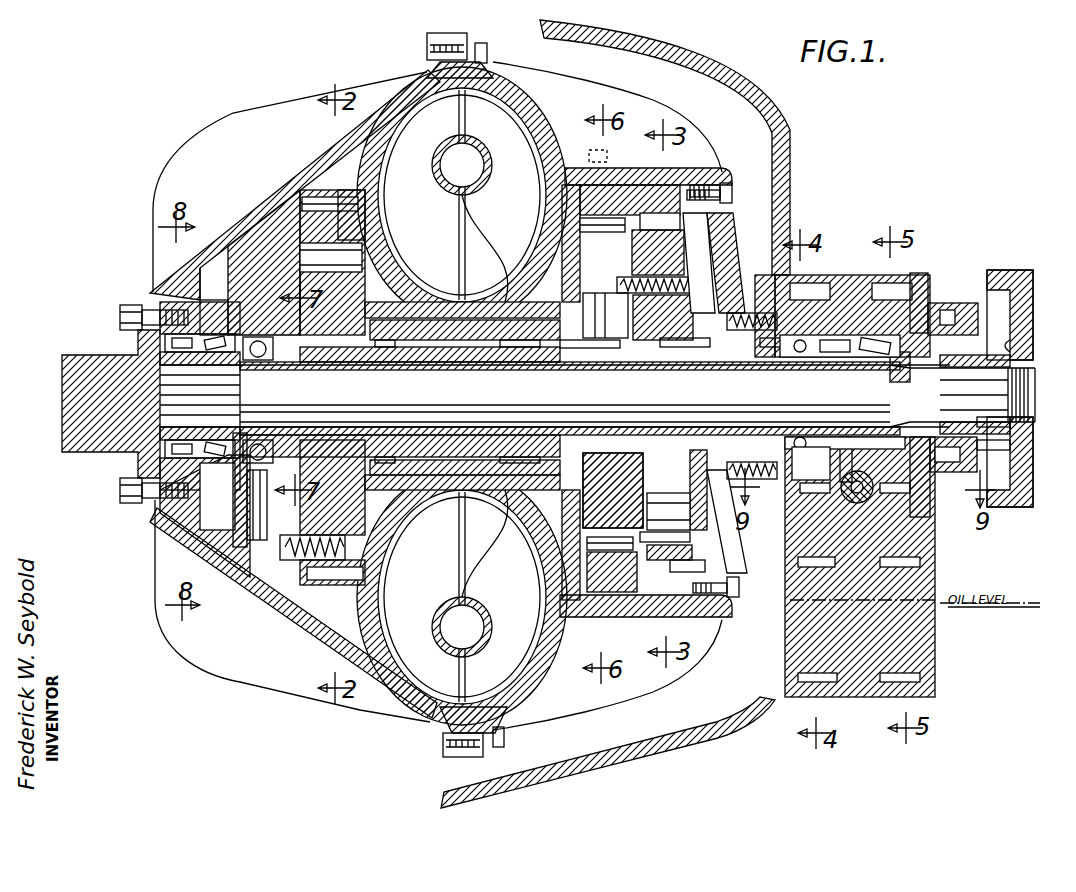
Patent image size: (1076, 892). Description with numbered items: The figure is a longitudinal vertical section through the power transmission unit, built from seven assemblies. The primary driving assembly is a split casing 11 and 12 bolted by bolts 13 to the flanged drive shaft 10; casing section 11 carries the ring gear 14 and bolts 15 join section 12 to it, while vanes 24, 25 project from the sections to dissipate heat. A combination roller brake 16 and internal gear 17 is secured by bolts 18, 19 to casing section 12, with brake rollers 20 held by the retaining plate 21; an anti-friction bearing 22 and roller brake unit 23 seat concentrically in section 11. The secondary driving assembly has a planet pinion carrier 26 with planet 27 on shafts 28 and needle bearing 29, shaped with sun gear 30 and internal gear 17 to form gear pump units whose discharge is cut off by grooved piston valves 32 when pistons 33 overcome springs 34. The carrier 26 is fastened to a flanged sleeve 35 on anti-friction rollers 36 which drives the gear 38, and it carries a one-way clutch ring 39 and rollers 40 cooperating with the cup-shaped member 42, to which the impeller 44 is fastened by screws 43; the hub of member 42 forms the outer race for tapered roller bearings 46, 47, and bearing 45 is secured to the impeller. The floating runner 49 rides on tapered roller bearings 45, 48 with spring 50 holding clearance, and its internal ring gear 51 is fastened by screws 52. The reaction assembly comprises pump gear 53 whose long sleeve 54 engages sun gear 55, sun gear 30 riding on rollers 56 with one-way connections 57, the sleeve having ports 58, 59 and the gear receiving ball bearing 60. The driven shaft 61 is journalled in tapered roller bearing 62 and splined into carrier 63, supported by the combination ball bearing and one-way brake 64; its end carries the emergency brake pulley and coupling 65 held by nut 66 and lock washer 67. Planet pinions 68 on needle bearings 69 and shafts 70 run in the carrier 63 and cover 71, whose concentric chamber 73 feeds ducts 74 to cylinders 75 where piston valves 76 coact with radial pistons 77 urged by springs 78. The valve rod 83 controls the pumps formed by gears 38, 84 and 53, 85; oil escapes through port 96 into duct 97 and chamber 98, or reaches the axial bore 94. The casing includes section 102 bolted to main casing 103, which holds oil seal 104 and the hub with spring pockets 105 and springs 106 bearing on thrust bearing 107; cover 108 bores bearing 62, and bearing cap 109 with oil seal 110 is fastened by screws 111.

The flanged drive shaft 10 is at (75, 356).
The casing section 11 is at (305, 162).
The casing section 12 is at (548, 97).
The bolts 13 is at (125, 305).
The ring gear 14 is at (427, 40).
The bolts 15 is at (488, 53).
The roller brake 16 is at (640, 213).
The internal gear 17 is at (690, 185).
The bolts 18 is at (590, 155).
The bolts 19 is at (728, 185).
The brake rollers 20 is at (605, 218).
The retaining plate 21 is at (560, 198).
The anti-friction bearing 22 is at (206, 325).
The roller brake unit 23 is at (165, 340).
The vanes 24 is at (228, 128).
The vanes 25 is at (645, 100).
The planet pinion carrier 26 is at (645, 521).
The planet 27 is at (679, 560).
The shafts 28 is at (668, 511).
The needle bearing 29 is at (690, 537).
The sun gear 30 is at (648, 352).
The grooved piston valves 32 is at (655, 285).
The pistons 33 is at (595, 352).
The springs 34 is at (720, 255).
The flanged sleeve 35 is at (705, 225).
The anti-friction rollers 36 is at (700, 352).
The gear 38 is at (812, 283).
The one-way clutch ring 39 is at (550, 248).
The rollers 40 is at (560, 235).
The cup-shaped member 42 is at (428, 345).
The screws 43 is at (555, 262).
The impeller 44 is at (555, 215).
The tapered roller bearing 45 is at (500, 262).
The tapered roller bearing 46 is at (565, 350).
The tapered roller bearing 47 is at (385, 350).
The tapered roller bearing 48 is at (460, 258).
The runner 49 is at (378, 218).
The spring 50 is at (462, 500).
The internal ring gear 51 is at (455, 178).
The screws 52 is at (300, 195).
The pump gear 53 is at (887, 283).
The long sleeve 54 is at (525, 370).
The sun gear 55 is at (322, 340).
The anti-friction rollers 56 is at (505, 350).
The one-way clutch or brake connections 57 is at (670, 352).
The ports 58 is at (848, 440).
The ports 59 is at (355, 430).
The ball bearing 60 is at (895, 352).
The driven shaft 61 is at (597, 396).
The tapered roller bearing 62 is at (928, 300).
The carrier 63 is at (250, 258).
The combination ball bearing and one-way brake 64 is at (280, 337).
The emergency brake pulley and coupling 65 is at (1020, 272).
The nut 66 is at (1035, 372).
The lock washer 67 is at (1025, 348).
The planet pinions 68 is at (440, 236).
The needle bearings 69 is at (300, 205).
The shafts 70 is at (331, 257).
The cover 71 is at (415, 268).
The concentric chamber 73 is at (345, 348).
The ducts 74 is at (375, 538).
The cylinders 75 is at (380, 585).
The piston valves 76 is at (245, 575).
The radial pistons 77 is at (258, 503).
The springs 78 is at (380, 560).
The valve rod 83 is at (895, 512).
The pump gear 84 is at (805, 650).
The pump gear 85 is at (900, 540).
The axial bore 94 is at (813, 508).
The port 96 is at (851, 470).
The duct 97 is at (933, 480).
The chamber 98 is at (855, 472).
The casing section 102 is at (850, 275).
The main casing 103 is at (788, 148).
The oil seal 104 is at (760, 280).
The spring pockets 105 is at (765, 332).
The springs 106 is at (745, 350).
The thrust bearing 107 is at (712, 352).
The cover 108 is at (925, 275).
The bearing cap 109 is at (965, 303).
The oil seal 110 is at (1012, 435).
The screws 111 is at (1012, 462).